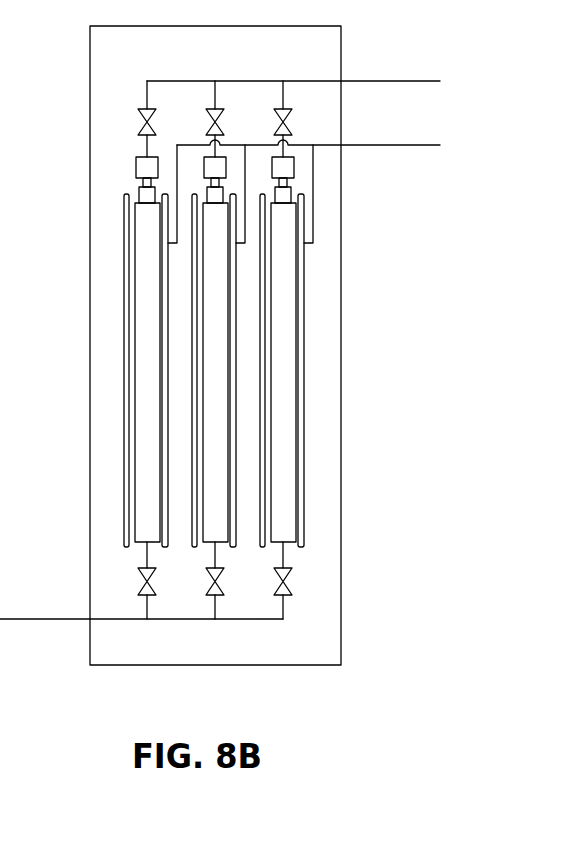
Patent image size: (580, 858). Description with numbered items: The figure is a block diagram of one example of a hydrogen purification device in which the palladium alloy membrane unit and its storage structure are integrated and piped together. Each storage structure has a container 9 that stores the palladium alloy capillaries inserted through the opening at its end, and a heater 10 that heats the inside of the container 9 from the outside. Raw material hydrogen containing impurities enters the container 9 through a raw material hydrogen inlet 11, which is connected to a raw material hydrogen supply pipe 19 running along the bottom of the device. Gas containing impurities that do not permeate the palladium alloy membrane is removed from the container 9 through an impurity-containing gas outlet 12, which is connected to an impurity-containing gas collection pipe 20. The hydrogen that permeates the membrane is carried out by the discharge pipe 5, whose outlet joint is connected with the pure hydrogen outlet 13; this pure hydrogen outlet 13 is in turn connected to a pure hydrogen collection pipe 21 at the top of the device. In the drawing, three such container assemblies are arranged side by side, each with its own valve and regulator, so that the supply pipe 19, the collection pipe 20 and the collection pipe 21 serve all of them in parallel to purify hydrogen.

The discharge pipe 5 is at (142, 188).
The container 9 is at (287, 363).
The heater 10 is at (303, 501).
The raw material hydrogen inlet 11 is at (143, 537).
The impurity-containing gas outlet 12 is at (305, 245).
The pure hydrogen outlet 13 is at (295, 168).
The raw material hydrogen supply pipe 19 is at (33, 619).
The impurity-containing gas collection pipe 20 is at (407, 145).
The pure hydrogen collection pipe 21 is at (413, 81).